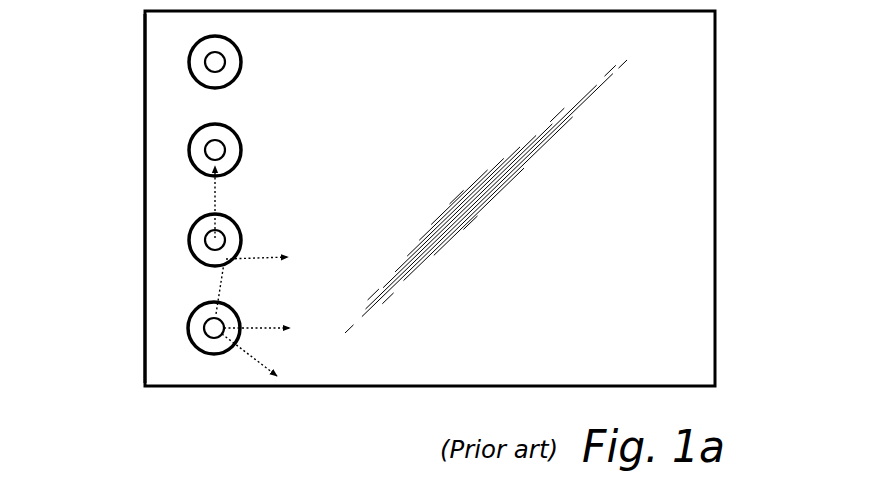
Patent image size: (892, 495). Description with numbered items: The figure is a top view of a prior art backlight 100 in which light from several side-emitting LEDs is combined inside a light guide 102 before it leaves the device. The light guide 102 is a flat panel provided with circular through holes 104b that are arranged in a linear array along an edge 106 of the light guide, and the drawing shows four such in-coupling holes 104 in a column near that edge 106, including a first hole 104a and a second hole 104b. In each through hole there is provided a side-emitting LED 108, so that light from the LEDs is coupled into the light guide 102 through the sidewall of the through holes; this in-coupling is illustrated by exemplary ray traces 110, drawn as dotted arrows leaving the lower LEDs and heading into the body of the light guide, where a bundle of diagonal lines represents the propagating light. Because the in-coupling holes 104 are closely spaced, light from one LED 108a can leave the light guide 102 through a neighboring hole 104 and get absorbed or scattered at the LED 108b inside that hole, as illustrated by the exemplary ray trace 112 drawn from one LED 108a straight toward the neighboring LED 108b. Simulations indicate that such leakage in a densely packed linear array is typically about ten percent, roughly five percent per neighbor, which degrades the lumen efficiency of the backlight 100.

The backlight 100 is at (780, 121).
The light guide 102 is at (715, 48).
The in-coupling hole 104 is at (190, 70).
The in-coupling hole 104a is at (190, 239).
The circular through hole 104b is at (190, 155).
The edge of the light guide 106 is at (144, 370).
The side-emitting LED 108 is at (225, 60).
The side-emitting LED 108a is at (205, 238).
The side-emitting LED 108b is at (225, 147).
The ray trace 110 is at (279, 311).
The ray trace 112 is at (217, 190).